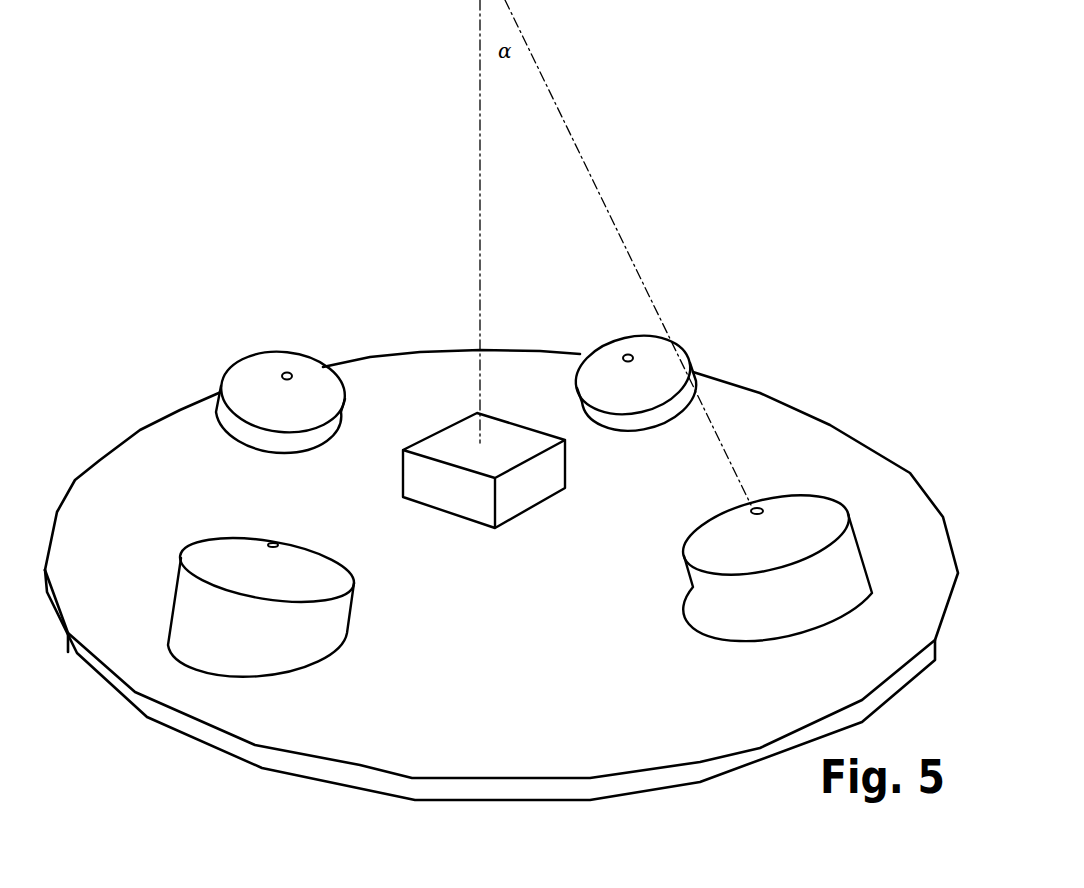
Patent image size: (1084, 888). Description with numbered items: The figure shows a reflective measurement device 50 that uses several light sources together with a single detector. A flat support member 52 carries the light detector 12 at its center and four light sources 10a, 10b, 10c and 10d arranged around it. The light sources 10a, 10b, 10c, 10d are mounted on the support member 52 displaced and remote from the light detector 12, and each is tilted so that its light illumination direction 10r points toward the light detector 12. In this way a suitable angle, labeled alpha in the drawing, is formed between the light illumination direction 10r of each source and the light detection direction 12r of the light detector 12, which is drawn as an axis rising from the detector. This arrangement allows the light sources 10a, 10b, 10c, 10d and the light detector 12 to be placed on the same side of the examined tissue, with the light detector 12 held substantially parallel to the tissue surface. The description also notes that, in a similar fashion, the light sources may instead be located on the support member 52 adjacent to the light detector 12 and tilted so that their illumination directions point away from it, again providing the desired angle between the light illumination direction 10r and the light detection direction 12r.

The reflective measurement device 50 is at (590, 656).
The support member 52 is at (803, 445).
The light detector 12 is at (467, 493).
The light detection direction 12r is at (480, 380).
The light source 10a is at (192, 610).
The light source 10b is at (338, 384).
The light source 10c is at (677, 337).
The light source 10d is at (797, 600).
The light illumination direction 10r is at (577, 147).